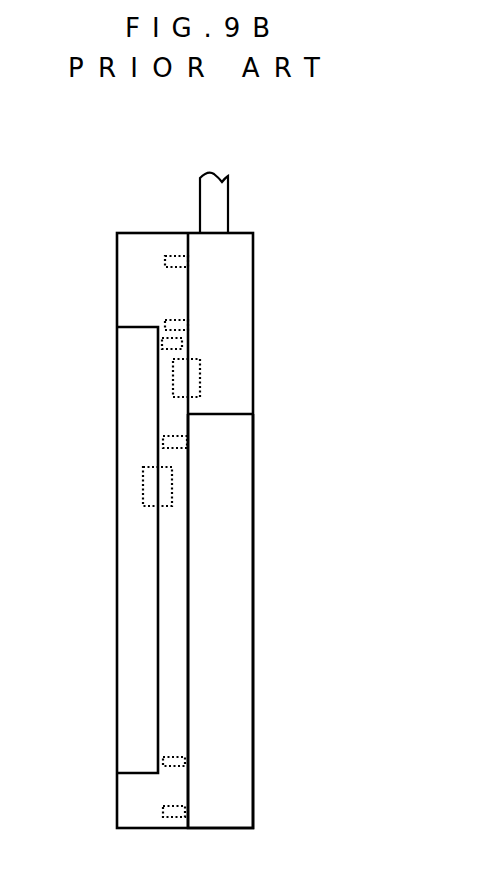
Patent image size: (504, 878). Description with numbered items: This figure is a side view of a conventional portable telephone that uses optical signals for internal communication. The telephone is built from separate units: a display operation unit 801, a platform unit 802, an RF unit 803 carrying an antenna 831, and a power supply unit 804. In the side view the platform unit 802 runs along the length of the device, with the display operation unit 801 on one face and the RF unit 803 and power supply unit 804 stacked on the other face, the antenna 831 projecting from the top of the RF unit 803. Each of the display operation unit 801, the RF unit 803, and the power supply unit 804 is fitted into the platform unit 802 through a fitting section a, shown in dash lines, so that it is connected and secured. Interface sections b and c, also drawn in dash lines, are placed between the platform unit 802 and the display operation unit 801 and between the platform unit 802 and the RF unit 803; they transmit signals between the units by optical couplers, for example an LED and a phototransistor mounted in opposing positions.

The display operation unit 801 is at (117, 668).
The platform unit 802 is at (151, 231).
The RF unit 803 is at (255, 280).
The power supply unit 804 is at (254, 577).
The antenna 831 is at (208, 193).
The fitting section a is at (181, 762).
The interface section b is at (143, 485).
The interface section c is at (200, 377).